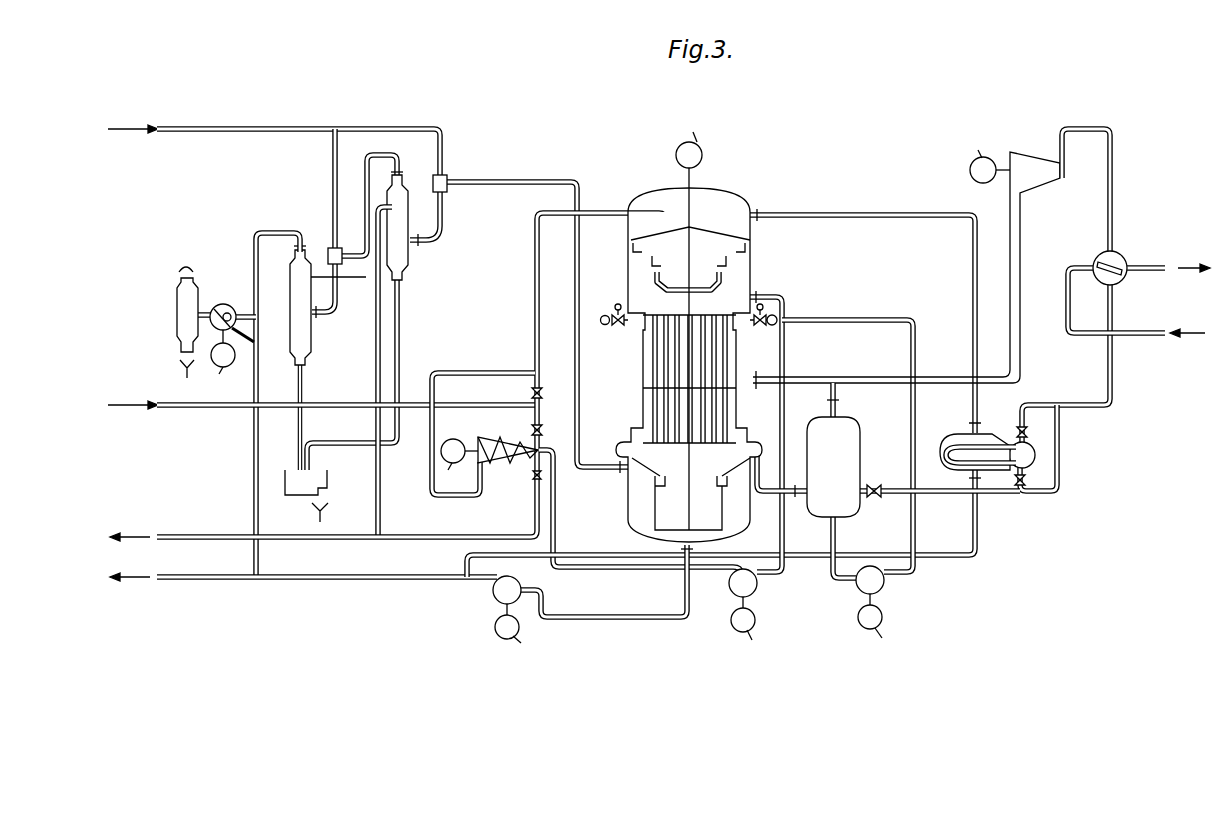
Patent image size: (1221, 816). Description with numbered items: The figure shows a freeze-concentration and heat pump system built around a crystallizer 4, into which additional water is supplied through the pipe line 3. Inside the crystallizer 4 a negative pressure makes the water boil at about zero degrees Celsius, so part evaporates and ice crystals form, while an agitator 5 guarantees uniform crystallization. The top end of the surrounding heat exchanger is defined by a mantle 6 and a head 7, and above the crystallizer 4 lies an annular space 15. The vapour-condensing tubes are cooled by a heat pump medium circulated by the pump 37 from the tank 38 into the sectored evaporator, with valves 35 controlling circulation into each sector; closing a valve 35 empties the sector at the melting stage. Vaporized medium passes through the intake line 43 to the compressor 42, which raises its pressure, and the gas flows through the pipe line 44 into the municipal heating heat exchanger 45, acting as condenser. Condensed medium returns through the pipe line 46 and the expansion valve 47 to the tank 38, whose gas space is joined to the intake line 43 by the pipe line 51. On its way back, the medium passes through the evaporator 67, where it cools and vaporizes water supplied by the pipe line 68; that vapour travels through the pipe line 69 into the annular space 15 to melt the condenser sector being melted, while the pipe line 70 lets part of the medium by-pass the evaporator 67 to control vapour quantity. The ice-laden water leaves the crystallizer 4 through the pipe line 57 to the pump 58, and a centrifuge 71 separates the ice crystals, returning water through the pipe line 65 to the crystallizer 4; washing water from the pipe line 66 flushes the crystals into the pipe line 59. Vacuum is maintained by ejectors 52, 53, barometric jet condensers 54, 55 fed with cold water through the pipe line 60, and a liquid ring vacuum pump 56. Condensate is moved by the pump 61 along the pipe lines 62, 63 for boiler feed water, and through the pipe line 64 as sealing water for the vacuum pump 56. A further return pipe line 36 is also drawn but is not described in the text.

The pipe line 3 is at (484, 406).
The crystallizer 4 is at (713, 247).
The agitator 5 is at (692, 198).
The mantle 6 is at (752, 274).
The head 7 is at (724, 191).
The annular space 15 is at (728, 208).
The valve 35 is at (768, 309).
The return line 36 is at (574, 323).
The pump 37 is at (879, 588).
The tank 38 is at (853, 438).
The compressor 42 is at (1060, 178).
The intake line 43 is at (816, 378).
The pipe line 44 is at (1114, 195).
The heat exchanger 45 is at (1119, 258).
The pipe line 46 is at (1078, 374).
The expansion valve 47 is at (875, 487).
The pipe line 51 is at (836, 402).
The ejector 52 is at (441, 217).
The ejector 53 is at (335, 292).
The barometric jet condenser 54 is at (401, 257).
The barometric jet condenser 55 is at (303, 335).
The liquid ring vacuum pump 56 is at (232, 304).
The pipe line 57 is at (785, 402).
The pump 58 is at (752, 596).
The pipe line 59 is at (457, 532).
The pipe line 60 is at (379, 510).
The pump 61 is at (490, 590).
The pipe line 62 is at (683, 600).
The pipe line 63 is at (397, 578).
The pipe line 64 is at (255, 470).
The pipe line 65 is at (465, 375).
The pipe line 66 is at (538, 420).
The evaporator 67 is at (953, 438).
The pipe line 68 is at (978, 532).
The pipe line 69 is at (968, 272).
The pipe line 70 is at (1060, 452).
The centrifuge 71 is at (522, 462).